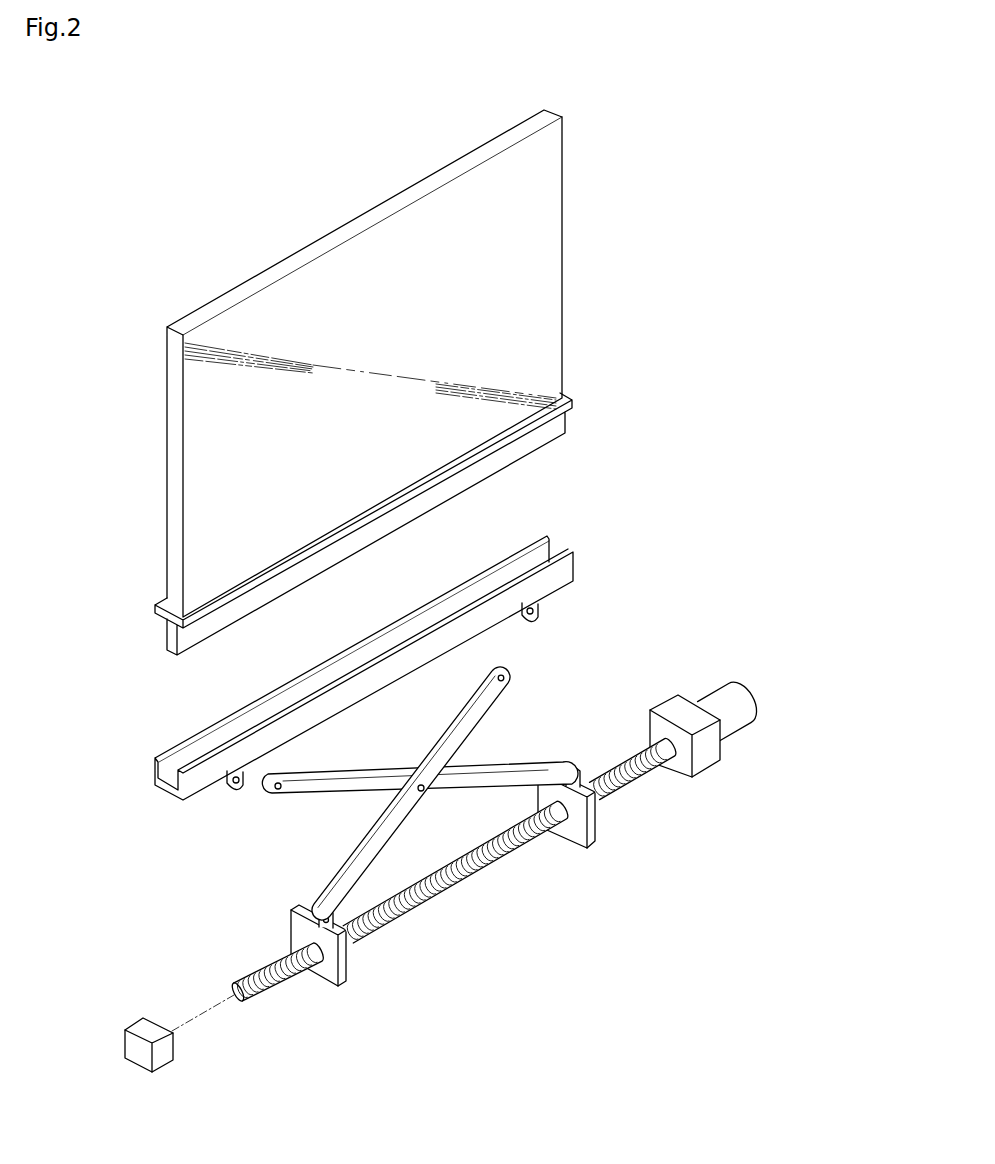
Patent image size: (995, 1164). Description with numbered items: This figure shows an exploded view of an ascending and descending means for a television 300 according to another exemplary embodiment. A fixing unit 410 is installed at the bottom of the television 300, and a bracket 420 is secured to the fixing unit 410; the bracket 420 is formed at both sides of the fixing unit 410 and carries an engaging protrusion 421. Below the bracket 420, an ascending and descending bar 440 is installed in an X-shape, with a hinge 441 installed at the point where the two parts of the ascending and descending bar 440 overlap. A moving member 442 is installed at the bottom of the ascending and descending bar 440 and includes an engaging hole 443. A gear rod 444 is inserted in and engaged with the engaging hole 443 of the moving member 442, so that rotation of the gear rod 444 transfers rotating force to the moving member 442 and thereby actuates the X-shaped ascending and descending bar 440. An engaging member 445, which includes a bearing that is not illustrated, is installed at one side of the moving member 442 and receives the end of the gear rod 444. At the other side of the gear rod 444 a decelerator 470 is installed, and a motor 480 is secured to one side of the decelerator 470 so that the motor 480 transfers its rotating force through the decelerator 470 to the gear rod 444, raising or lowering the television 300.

The television 300 is at (545, 248).
The fixing unit 410 is at (555, 430).
The bracket 420 is at (540, 588).
The engaging protrusion 421 is at (518, 630).
The ascending and descending bar 440 is at (377, 850).
The hinge 441 is at (427, 788).
The moving member 442 is at (347, 960).
The engaging hole 443 is at (322, 957).
The gear rod 444 is at (455, 878).
The engaging member 445 is at (168, 1055).
The decelerator 470 is at (710, 767).
The motor 480 is at (713, 700).